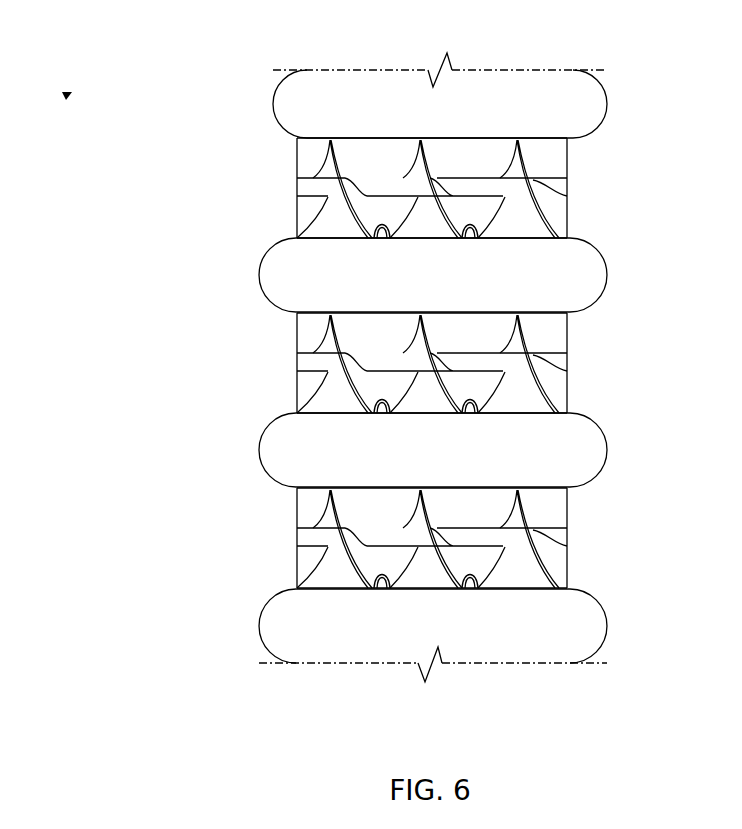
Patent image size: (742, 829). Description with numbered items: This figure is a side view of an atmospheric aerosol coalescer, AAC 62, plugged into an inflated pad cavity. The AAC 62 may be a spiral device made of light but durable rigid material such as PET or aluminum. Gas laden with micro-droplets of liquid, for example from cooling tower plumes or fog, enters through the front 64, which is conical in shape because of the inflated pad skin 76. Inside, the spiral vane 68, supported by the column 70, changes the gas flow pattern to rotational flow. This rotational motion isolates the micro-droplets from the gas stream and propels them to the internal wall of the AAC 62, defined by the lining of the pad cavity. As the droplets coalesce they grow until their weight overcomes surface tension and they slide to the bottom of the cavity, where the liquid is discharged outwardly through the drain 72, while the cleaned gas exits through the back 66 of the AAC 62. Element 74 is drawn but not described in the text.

The AAC 62 is at (367, 365).
The front 64 is at (297, 186).
The back 66 is at (563, 197).
The spiral vane 68 is at (390, 137).
The column 70 is at (550, 174).
The drain 72 is at (382, 590).
The connector ring 74 is at (332, 109).
The inflated pad skin 76 is at (482, 137).